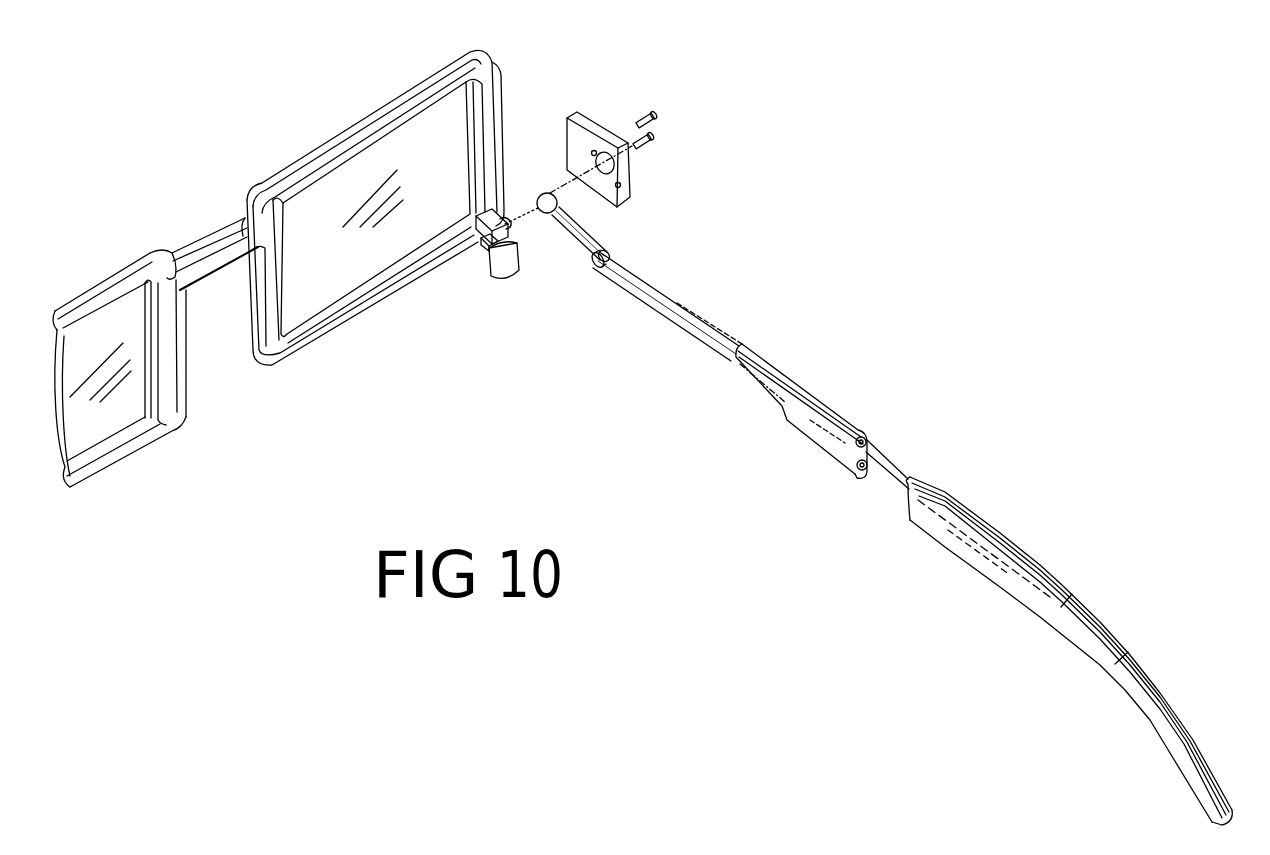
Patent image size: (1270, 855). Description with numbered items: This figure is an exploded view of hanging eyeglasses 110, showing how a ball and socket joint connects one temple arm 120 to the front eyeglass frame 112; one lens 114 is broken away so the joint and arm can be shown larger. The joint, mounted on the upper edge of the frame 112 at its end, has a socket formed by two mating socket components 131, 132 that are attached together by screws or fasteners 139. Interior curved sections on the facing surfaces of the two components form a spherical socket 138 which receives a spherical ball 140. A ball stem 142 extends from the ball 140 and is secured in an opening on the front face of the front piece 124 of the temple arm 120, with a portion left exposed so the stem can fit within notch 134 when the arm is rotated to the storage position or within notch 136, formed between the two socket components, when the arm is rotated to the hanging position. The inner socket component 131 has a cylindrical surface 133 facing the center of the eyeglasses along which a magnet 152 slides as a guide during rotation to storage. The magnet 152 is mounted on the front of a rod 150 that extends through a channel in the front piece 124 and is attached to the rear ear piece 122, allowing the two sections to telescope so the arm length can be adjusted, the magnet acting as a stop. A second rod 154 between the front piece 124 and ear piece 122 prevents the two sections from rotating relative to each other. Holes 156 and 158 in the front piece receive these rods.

The hanging eyeglasses 110 is at (277, 267).
The front eyeglass frame 112 is at (153, 257).
The lens 114 is at (370, 240).
The temple arm 120 is at (911, 523).
The ear piece 122 is at (970, 563).
The front piece 124 is at (830, 437).
The socket component 131 is at (480, 260).
The socket component 132 is at (643, 121).
The cylindrical surface 133 is at (503, 263).
The notch 134 is at (477, 246).
The notch 136 is at (502, 222).
The spherical socket 138 is at (633, 187).
The fasteners 139 is at (658, 137).
The spherical ball 140 is at (549, 192).
The ball stem 142 is at (597, 230).
The rod 150 is at (643, 297).
The magnet 152 is at (606, 258).
The second rod 154 is at (893, 467).
The upper hole 156 is at (864, 447).
The lower hole 158 is at (867, 470).